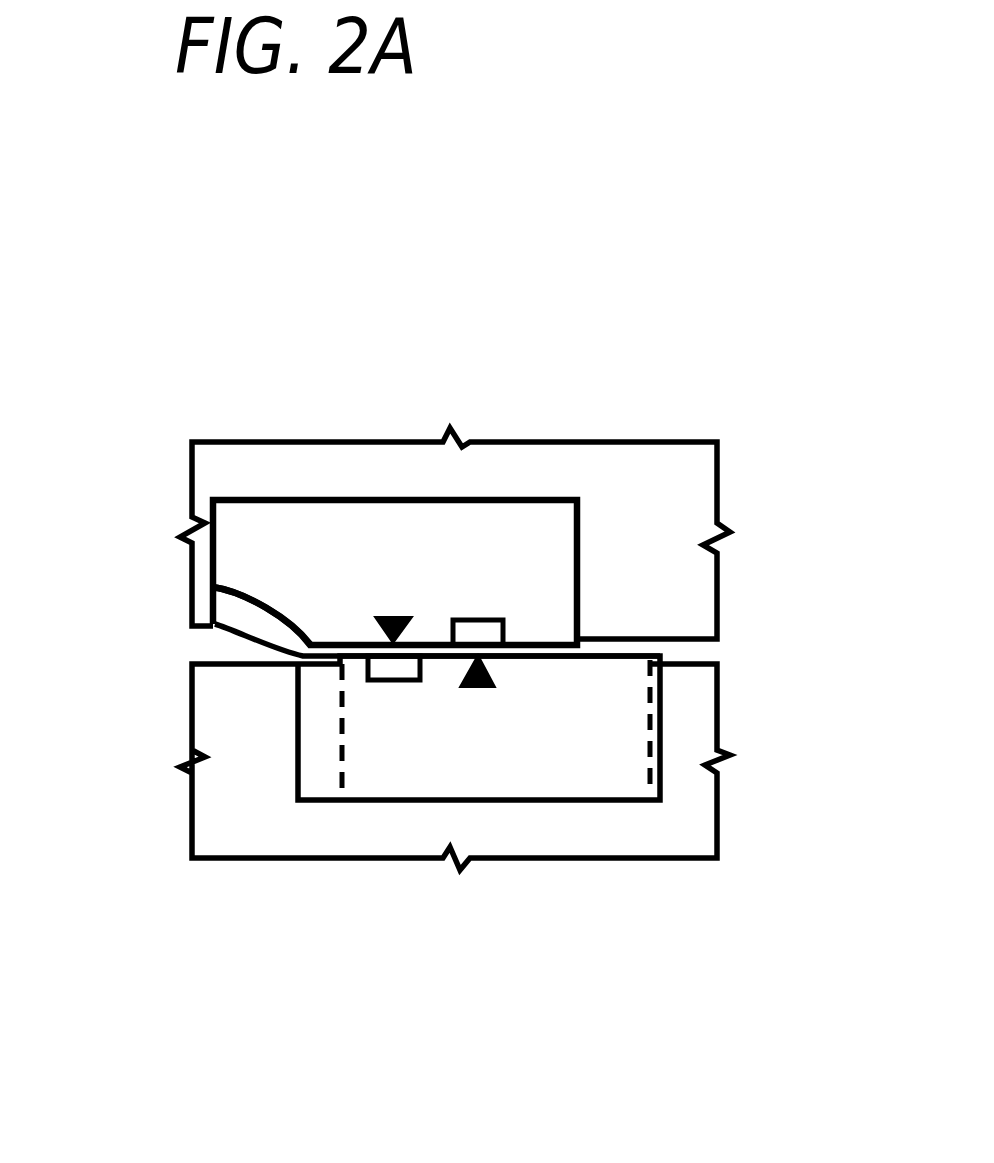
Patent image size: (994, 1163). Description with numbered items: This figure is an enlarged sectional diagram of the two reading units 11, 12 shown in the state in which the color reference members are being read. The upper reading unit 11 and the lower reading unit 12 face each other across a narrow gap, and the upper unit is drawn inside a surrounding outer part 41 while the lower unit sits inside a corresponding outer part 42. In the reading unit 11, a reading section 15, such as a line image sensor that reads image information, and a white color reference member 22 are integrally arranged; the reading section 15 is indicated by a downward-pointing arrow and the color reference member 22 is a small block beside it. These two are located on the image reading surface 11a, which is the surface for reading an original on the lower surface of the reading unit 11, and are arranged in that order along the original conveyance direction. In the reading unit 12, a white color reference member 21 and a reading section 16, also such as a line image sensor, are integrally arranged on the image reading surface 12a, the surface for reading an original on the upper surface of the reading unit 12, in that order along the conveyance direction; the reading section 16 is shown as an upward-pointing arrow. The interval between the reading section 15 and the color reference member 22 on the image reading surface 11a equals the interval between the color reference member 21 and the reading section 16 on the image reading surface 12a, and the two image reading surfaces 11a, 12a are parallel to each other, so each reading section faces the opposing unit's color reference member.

The reading unit 11 is at (337, 557).
The image reading surface 11a is at (213, 587).
The reading unit 12 is at (570, 730).
The image reading surface 12a is at (660, 711).
The reading section 15 is at (392, 617).
The reading section 16 is at (482, 687).
The color reference member 21 is at (392, 680).
The color reference member 22 is at (478, 633).
The upper holding stage 41 is at (661, 504).
The lower holding stage 42 is at (260, 795).